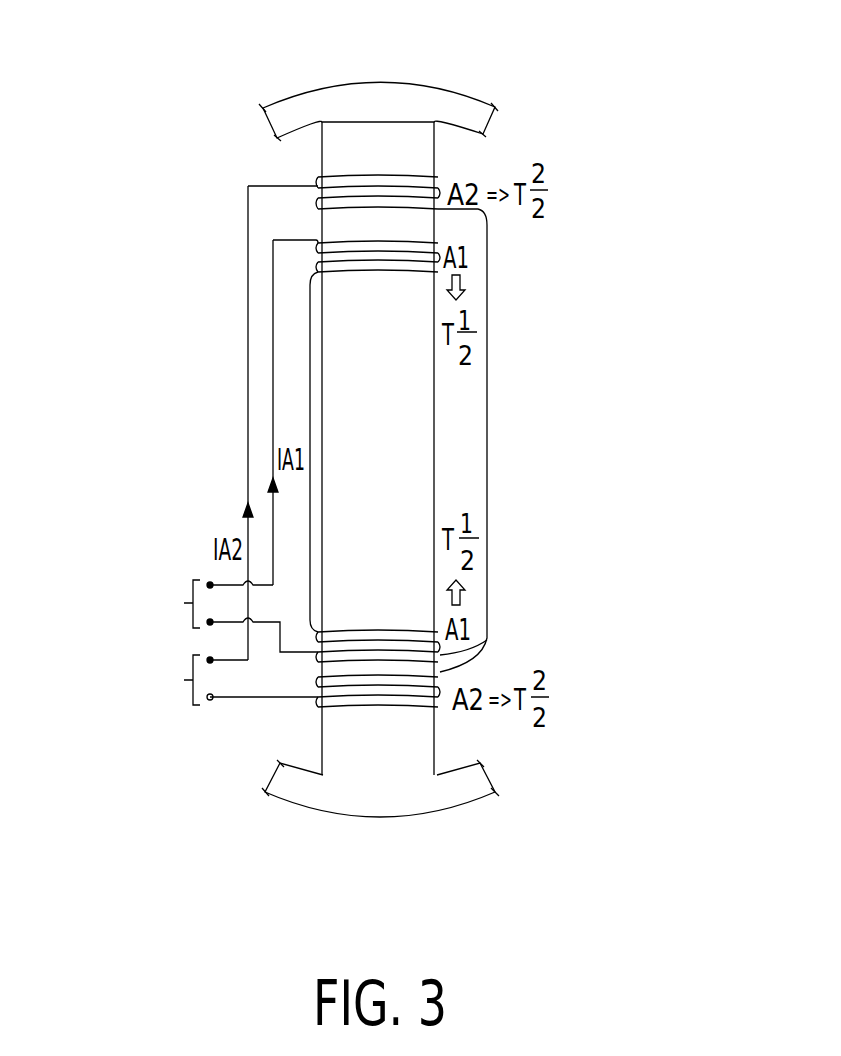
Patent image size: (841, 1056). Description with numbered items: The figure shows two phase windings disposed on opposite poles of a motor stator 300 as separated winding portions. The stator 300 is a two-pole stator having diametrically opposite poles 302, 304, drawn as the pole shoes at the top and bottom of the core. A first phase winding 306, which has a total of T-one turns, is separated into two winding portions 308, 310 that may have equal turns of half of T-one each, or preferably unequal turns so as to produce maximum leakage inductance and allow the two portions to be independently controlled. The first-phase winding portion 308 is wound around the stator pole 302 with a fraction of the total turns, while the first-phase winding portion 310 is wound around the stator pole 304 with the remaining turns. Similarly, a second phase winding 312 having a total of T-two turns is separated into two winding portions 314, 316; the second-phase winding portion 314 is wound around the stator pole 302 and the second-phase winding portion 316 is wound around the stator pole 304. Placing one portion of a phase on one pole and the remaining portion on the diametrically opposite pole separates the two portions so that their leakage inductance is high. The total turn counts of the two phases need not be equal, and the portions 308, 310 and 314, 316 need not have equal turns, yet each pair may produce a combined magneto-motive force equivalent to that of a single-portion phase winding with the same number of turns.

The motor stator 300 is at (650, 112).
The stator pole 302 is at (479, 110).
The stator pole 304 is at (382, 806).
The phase A1 winding 306 is at (143, 598).
The phase A1 winding portion 308 is at (316, 205).
The phase A1 winding portion 310 is at (489, 637).
The phase A2 winding 312 is at (143, 683).
The phase A2 winding portion 314 is at (310, 256).
The phase A2 winding portion 316 is at (318, 678).